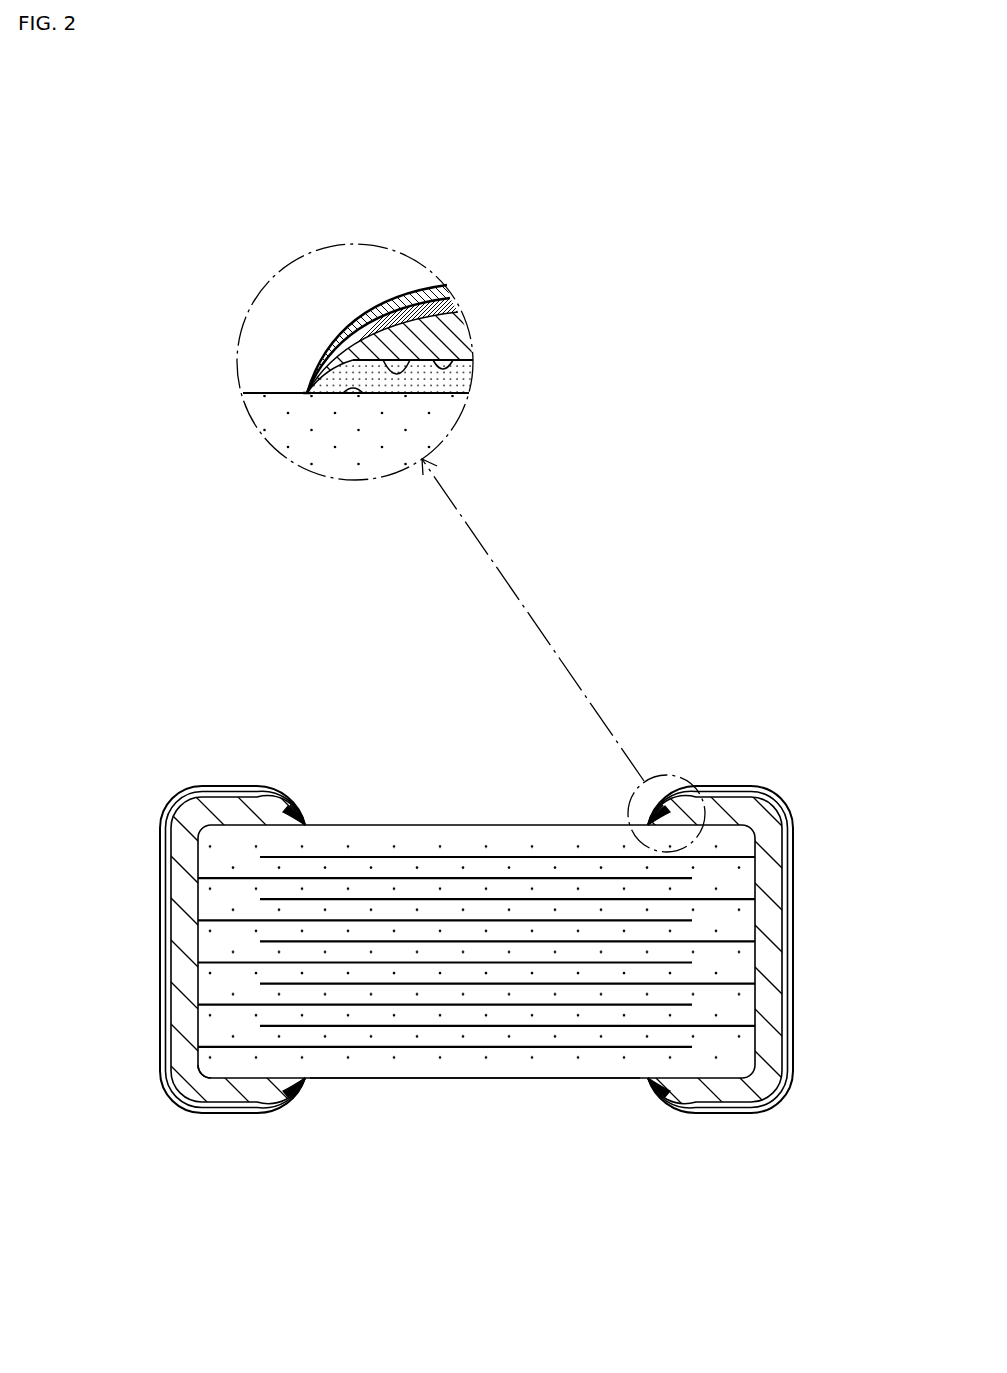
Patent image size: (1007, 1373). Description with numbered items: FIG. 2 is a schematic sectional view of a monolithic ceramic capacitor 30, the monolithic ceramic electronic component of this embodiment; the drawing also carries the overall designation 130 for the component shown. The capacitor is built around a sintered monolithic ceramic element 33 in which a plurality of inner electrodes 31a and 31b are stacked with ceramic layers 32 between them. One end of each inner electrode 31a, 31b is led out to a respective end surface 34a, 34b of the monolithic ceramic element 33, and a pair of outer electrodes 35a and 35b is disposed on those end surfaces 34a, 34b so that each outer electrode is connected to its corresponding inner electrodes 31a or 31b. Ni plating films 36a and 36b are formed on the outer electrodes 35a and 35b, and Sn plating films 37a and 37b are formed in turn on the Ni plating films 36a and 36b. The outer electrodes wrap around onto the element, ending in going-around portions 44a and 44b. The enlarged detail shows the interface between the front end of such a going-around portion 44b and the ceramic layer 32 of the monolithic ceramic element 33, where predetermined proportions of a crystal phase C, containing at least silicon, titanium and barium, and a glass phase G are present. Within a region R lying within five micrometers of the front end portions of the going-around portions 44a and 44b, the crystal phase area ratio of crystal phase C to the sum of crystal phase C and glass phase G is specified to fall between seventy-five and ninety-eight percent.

The multilayer ceramic capacitor 130 is at (447, 770).
The monolithic ceramic capacitor 30 is at (498, 807).
The inner electrode 31a is at (428, 920).
The inner electrode 31b is at (367, 962).
The ceramic layer 32 is at (542, 965).
The monolithic ceramic element 33 is at (465, 1080).
The end surface 34a is at (196, 922).
The end surface 34b is at (758, 998).
The outer electrode 35a is at (166, 843).
The outer electrode 35b is at (785, 915).
The Ni plating film 36a is at (177, 797).
The Ni plating film 36b is at (790, 817).
The Sn plating film 37a is at (203, 786).
The Sn plating film 37b is at (750, 785).
The going-around portion 44a is at (308, 820).
The going-around portion 44b is at (647, 817).
The region R is at (380, 403).
The glass phase G is at (450, 365).
The crystal phase C is at (307, 393).